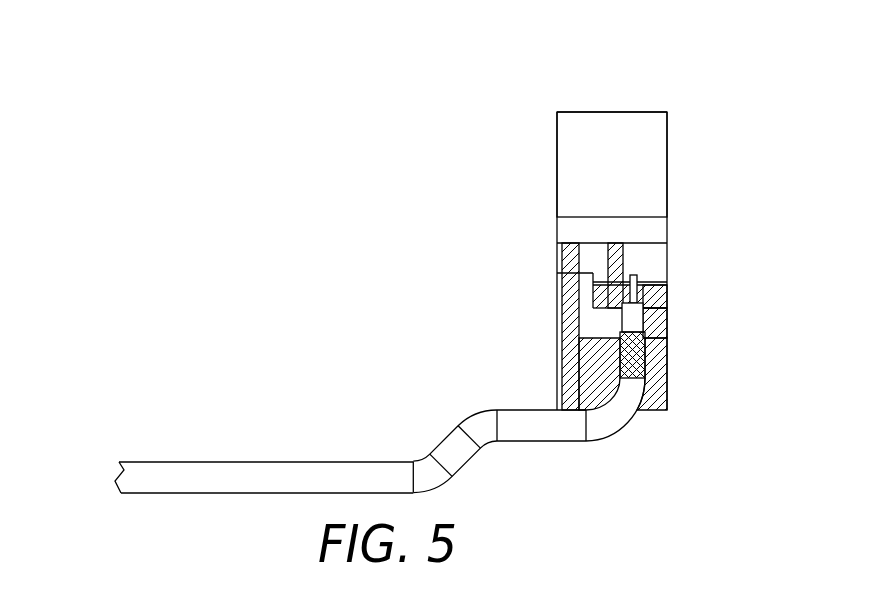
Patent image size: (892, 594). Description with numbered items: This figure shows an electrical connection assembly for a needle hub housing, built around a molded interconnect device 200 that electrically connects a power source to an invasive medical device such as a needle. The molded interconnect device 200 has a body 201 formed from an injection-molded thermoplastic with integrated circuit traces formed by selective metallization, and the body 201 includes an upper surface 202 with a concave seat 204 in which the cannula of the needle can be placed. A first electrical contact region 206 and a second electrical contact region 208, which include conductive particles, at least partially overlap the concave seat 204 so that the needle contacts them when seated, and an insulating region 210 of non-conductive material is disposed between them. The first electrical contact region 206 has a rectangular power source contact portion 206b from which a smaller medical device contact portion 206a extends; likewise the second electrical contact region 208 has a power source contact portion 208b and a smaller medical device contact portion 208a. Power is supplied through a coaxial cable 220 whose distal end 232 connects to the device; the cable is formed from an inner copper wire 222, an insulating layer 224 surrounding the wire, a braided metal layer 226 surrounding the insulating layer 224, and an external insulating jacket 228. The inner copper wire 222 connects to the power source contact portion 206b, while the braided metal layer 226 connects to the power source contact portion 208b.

The molded interconnect device 200 is at (528, 147).
The body 201 is at (622, 111).
The upper surface 202 is at (650, 147).
The concave seat 204 is at (650, 268).
The first electrical contact region 206 is at (606, 295).
The medical device contact portion 206a is at (612, 248).
The power source contact portion 206b is at (660, 295).
The second electrical contact region 208 is at (595, 360).
The medical device contact portion 208a is at (578, 294).
The power source contact portion 208b is at (666, 395).
The insulating region 210 is at (655, 318).
The coaxial cable 220 is at (278, 438).
The inner copper wire 222 is at (655, 283).
The insulating layer 224 is at (645, 322).
The braided metal layer 226 is at (647, 353).
The external insulating jacket 228 is at (572, 430).
The distal end 232 is at (553, 462).